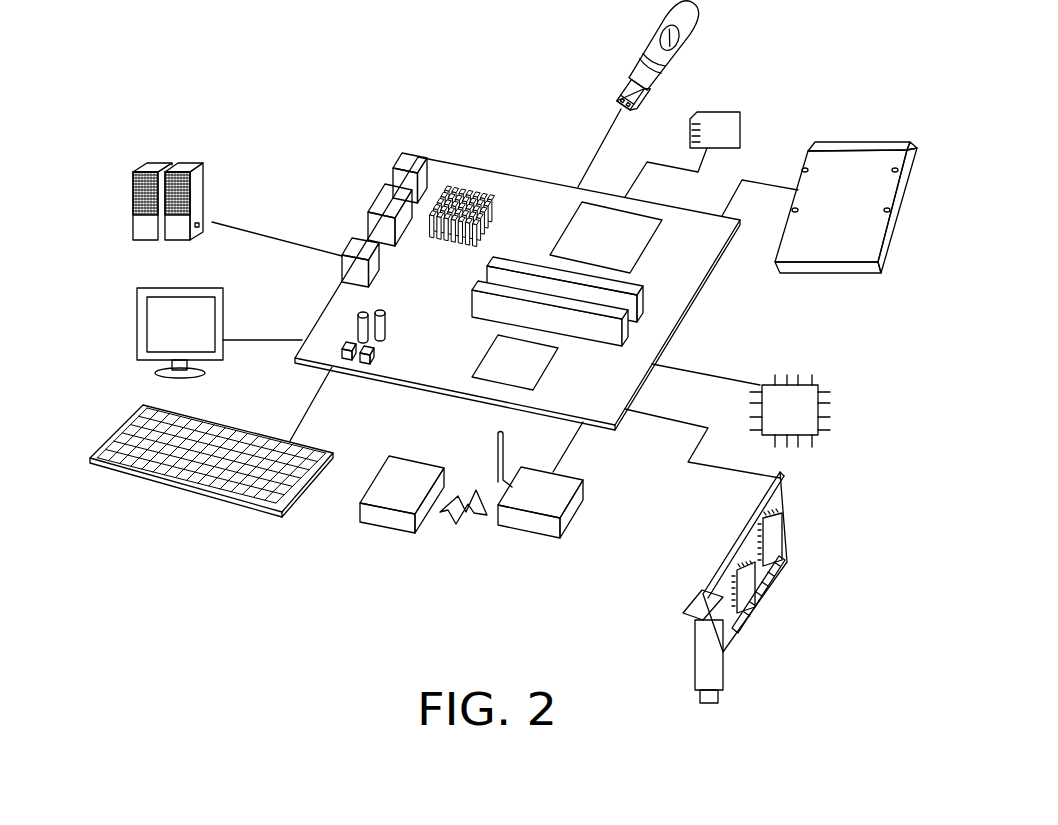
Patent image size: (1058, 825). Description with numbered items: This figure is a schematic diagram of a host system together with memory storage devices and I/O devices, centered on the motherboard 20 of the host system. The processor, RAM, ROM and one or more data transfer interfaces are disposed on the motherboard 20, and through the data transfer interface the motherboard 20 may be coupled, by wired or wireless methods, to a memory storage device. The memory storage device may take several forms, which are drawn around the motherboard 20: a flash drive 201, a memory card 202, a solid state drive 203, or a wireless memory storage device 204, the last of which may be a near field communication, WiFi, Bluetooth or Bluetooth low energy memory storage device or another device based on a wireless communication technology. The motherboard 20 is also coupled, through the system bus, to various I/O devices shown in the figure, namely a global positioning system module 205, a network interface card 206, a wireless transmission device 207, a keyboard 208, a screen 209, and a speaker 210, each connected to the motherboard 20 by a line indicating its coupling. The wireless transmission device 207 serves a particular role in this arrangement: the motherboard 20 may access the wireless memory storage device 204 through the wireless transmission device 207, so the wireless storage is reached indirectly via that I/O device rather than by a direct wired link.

The motherboard 20 is at (520, 193).
The flash drive 201 is at (642, 43).
The memory card 202 is at (742, 118).
The solid state drive 203 is at (865, 142).
The wireless memory storage device 204 is at (377, 468).
The global positioning system module 205 is at (823, 408).
The network interface card 206 is at (788, 532).
The wireless transmission device 207 is at (575, 515).
The keyboard 208 is at (217, 502).
The screen 209 is at (137, 341).
The speaker 210 is at (133, 222).